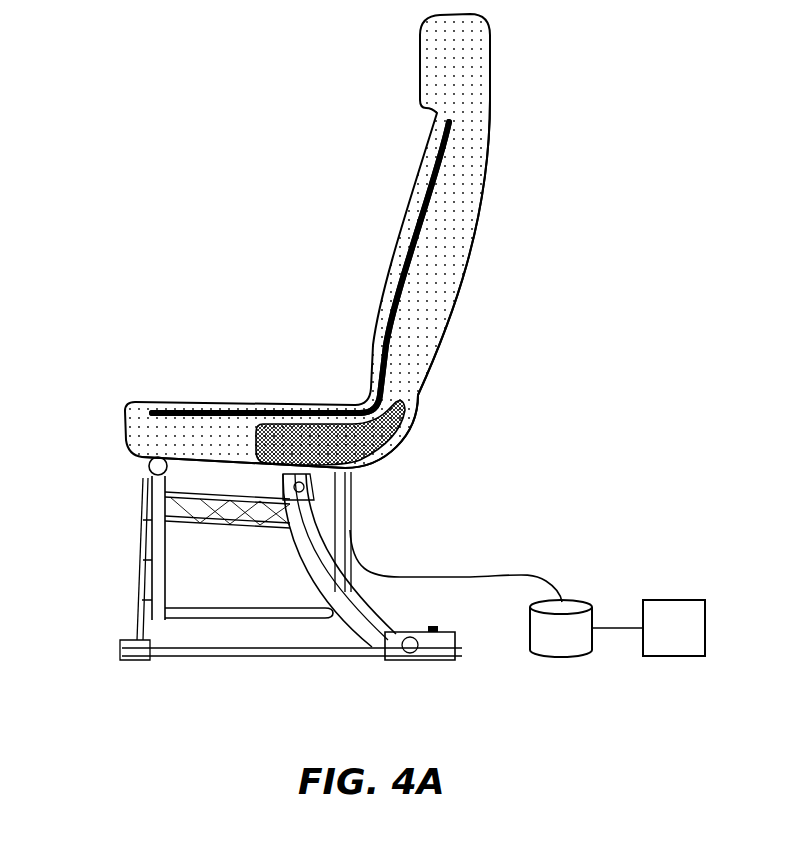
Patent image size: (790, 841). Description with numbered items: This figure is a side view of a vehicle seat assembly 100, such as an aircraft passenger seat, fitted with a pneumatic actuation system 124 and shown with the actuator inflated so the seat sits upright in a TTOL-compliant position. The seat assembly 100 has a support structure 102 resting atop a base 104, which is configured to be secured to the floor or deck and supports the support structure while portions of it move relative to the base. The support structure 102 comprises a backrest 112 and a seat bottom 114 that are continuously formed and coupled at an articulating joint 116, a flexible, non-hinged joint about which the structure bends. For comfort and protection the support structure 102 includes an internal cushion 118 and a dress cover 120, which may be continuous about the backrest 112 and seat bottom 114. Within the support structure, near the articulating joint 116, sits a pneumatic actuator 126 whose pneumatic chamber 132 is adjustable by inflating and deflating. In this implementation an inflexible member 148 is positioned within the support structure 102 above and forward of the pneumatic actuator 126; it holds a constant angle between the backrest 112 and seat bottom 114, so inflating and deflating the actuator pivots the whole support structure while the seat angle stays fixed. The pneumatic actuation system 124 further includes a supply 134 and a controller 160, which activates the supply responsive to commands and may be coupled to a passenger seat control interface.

The vehicle seat assembly 100 is at (203, 201).
The support structure 102 is at (375, 290).
The base 104 is at (125, 552).
The backrest 112 is at (400, 222).
The seat bottom 114 is at (210, 400).
The articulating joint 116 is at (357, 403).
The internal cushion 118 is at (468, 160).
The dress cover 120 is at (480, 205).
The pneumatic actuation system 124 is at (611, 577).
The pneumatic actuator 126 is at (395, 432).
The pneumatic chamber 132 is at (350, 446).
The supply 134 is at (586, 628).
The inflexible member 148 is at (402, 270).
The controller 160 is at (674, 628).